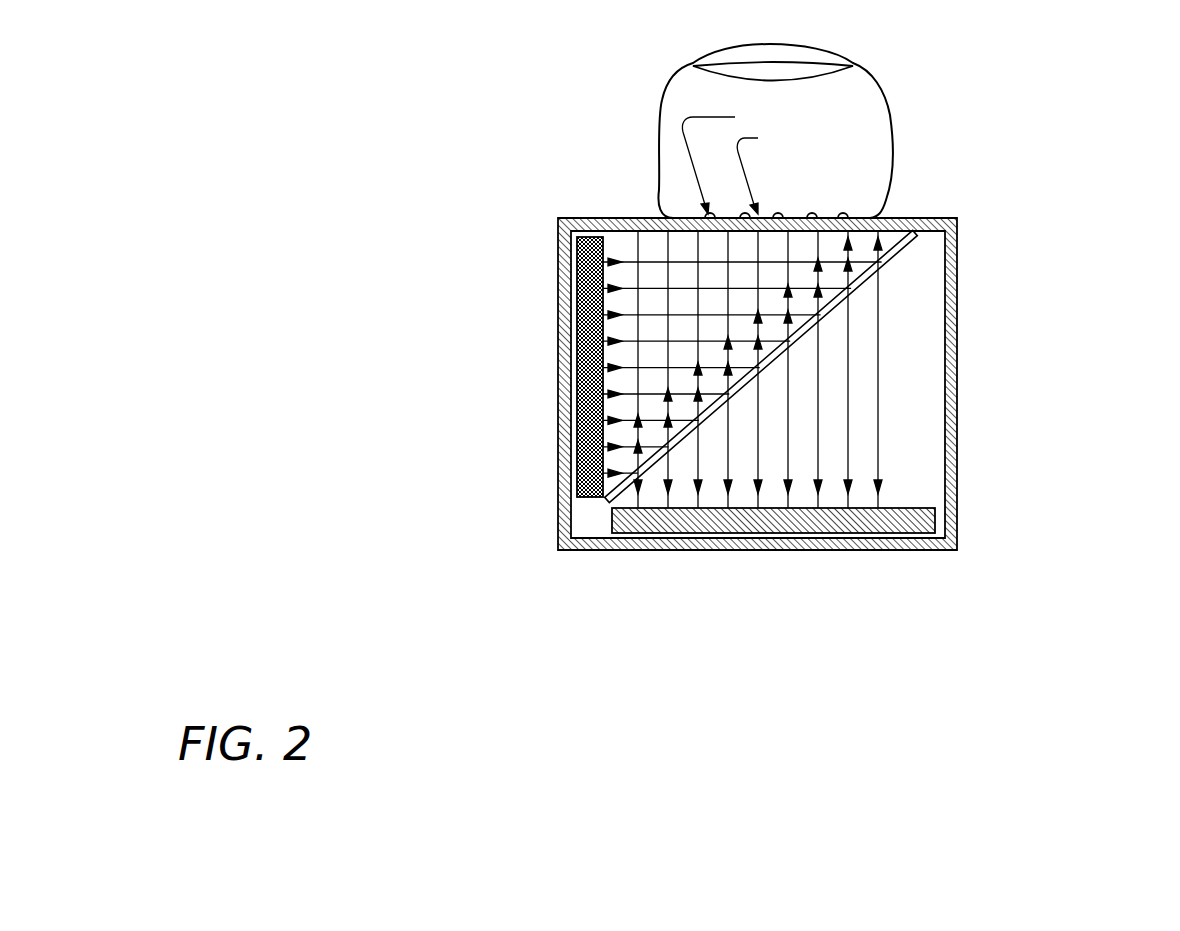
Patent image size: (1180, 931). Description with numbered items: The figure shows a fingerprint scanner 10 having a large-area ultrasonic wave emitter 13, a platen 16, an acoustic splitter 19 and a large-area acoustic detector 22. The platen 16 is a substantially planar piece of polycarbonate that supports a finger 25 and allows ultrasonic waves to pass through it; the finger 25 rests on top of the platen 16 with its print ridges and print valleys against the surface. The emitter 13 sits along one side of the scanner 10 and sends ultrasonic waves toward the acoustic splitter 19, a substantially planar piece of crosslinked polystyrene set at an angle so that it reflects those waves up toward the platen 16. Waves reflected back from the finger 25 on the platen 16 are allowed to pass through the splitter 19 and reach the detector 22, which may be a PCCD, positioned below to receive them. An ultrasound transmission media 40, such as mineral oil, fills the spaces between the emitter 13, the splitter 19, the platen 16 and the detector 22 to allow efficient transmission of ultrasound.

The fingerprint scanner 10 is at (1020, 338).
The ultrasonic wave emitter 13 is at (588, 500).
The platen 16 is at (905, 218).
The acoustic splitter 19 is at (893, 258).
The acoustic detector 22 is at (607, 522).
The finger 25 is at (886, 95).
The ultrasound transmission media 40 is at (927, 406).